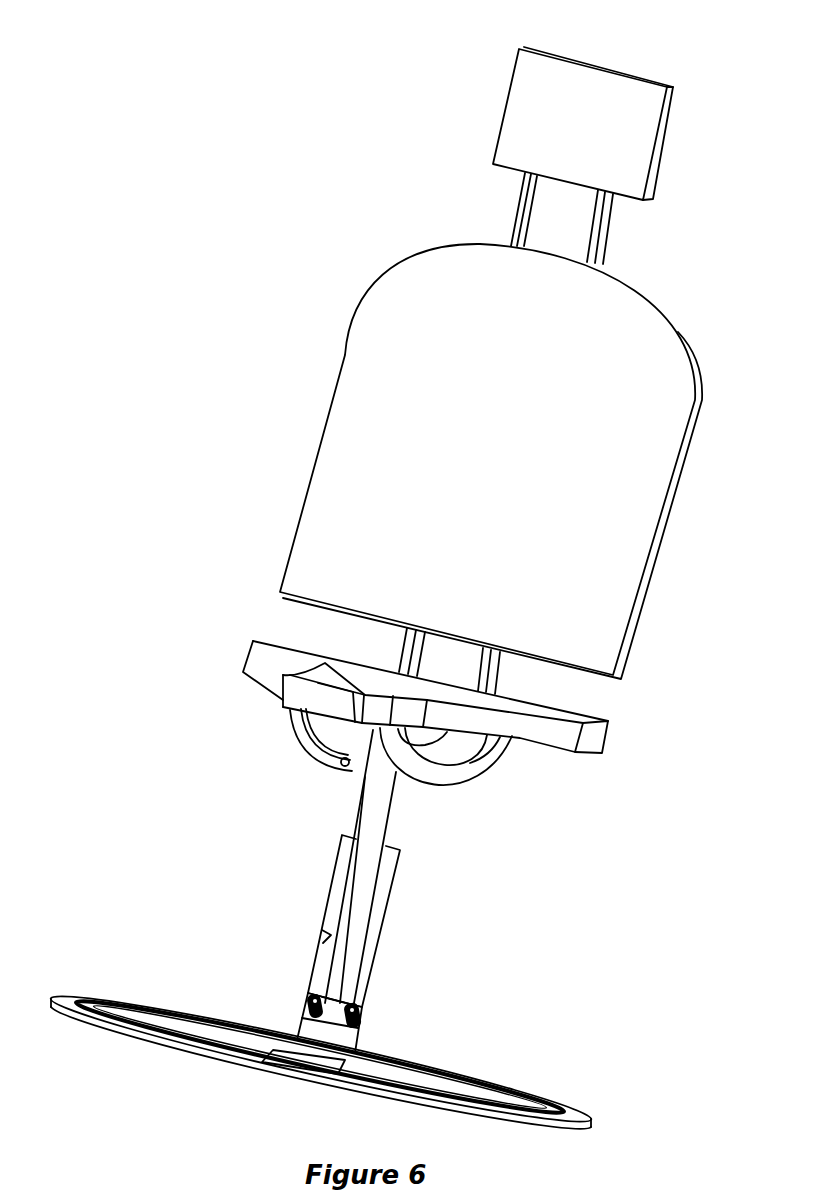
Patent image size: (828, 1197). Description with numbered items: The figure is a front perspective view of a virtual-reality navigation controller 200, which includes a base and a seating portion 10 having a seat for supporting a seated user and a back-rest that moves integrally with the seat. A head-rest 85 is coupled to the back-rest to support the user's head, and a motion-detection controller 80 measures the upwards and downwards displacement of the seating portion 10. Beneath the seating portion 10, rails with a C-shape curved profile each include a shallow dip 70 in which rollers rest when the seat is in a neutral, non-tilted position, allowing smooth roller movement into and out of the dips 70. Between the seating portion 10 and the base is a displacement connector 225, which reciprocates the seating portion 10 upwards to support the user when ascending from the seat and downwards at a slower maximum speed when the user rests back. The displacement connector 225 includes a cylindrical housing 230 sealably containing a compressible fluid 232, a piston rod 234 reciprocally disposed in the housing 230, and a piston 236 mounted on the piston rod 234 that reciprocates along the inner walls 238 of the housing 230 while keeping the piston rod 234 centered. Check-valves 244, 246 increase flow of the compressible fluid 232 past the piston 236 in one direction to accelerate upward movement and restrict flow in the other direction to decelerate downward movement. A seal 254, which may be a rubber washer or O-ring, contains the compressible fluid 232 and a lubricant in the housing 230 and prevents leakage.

The virtual-reality navigation controller 200 is at (414, 28).
The seating portion 10 is at (240, 577).
The head-rest 85 is at (527, 118).
The motion-detection controller 80 is at (350, 711).
The dip 70 is at (343, 771).
The displacement connector 225 is at (418, 924).
The seal 254 is at (403, 850).
The cylindrical housing 230 is at (340, 858).
The piston rod 234 is at (358, 893).
The inner walls 238 is at (328, 936).
The piston 236 is at (327, 1007).
The check-valve 244 is at (310, 1000).
The check-valve 246 is at (362, 1015).
The compressible fluid 232 is at (345, 1050).